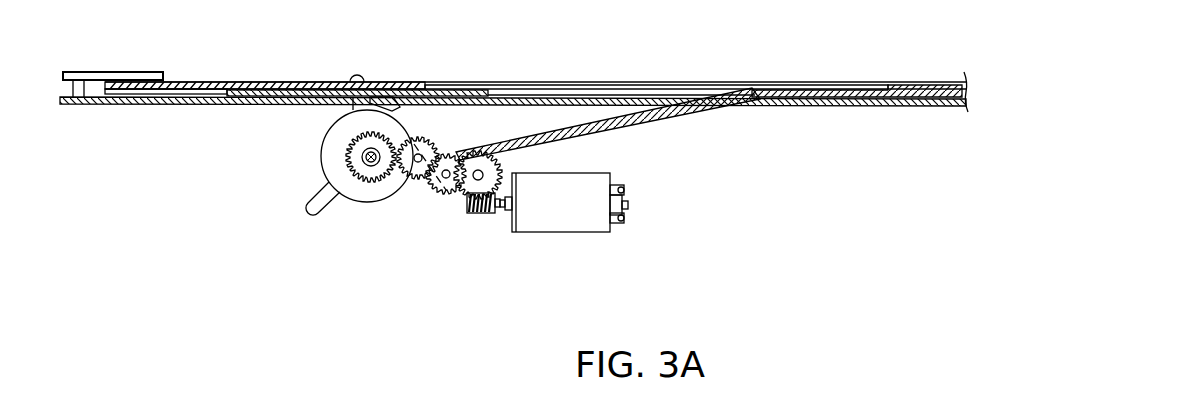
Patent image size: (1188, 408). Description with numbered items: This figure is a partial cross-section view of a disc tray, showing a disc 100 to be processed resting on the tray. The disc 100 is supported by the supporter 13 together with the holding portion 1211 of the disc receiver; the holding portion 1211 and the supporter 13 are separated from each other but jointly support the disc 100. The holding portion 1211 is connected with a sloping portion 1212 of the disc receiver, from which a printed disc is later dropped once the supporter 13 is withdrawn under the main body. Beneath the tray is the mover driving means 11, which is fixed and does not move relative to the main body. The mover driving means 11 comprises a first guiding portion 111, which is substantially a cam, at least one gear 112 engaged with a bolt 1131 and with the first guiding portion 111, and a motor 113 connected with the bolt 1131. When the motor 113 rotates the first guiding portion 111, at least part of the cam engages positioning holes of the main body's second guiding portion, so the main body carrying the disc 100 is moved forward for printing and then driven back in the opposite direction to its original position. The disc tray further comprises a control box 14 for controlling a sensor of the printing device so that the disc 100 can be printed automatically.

The disc 100 is at (555, 82).
The supporter 13 is at (467, 85).
The control box 14 is at (192, 103).
The holding portion 1211 is at (818, 93).
The sloping portion 1212 is at (675, 108).
The mover driving means 11 is at (467, 200).
The first guiding portion 111 is at (373, 200).
The gear 112 is at (438, 197).
The bolt 1131 is at (483, 212).
The motor 113 is at (570, 227).